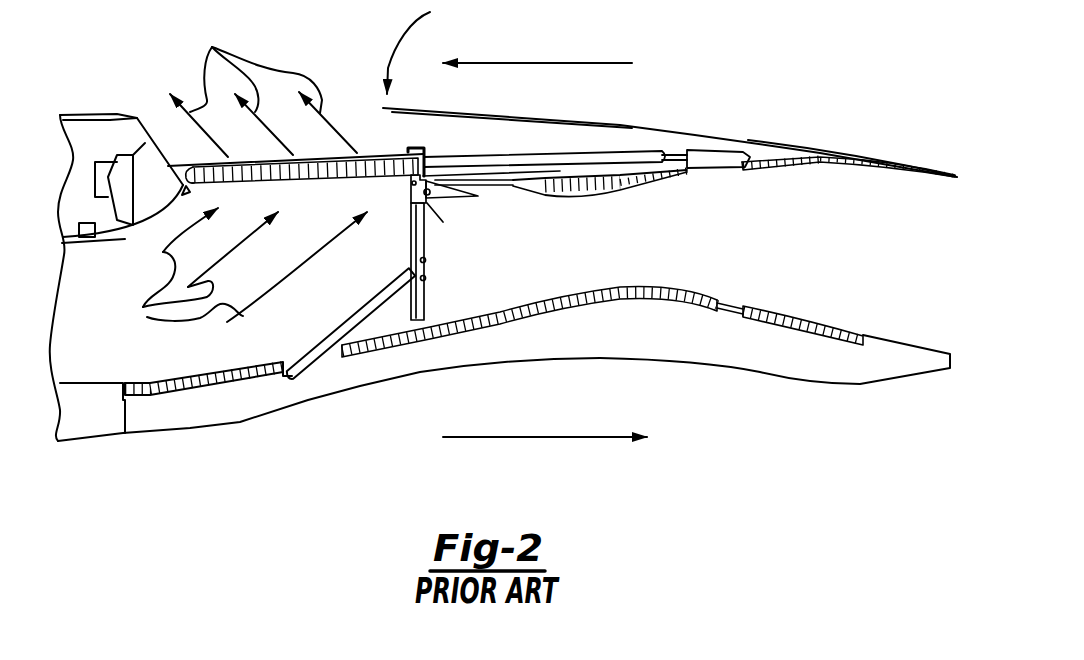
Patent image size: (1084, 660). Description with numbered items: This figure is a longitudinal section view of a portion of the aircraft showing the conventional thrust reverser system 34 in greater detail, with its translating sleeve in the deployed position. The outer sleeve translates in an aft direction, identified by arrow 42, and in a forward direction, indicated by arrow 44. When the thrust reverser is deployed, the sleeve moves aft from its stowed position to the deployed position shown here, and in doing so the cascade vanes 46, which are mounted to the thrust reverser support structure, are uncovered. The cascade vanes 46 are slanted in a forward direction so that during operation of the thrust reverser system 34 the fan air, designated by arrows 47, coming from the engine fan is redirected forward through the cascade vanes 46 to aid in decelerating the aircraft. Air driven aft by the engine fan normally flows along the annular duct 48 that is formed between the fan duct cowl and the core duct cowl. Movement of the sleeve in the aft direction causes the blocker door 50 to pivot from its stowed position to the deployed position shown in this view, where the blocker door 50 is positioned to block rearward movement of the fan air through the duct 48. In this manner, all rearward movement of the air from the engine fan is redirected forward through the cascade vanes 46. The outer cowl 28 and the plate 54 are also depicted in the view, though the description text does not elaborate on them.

The nacelle cowl 28 is at (636, 124).
The thrust reverser system 34 is at (419, 47).
The arrow indicating aft direction 42 is at (576, 437).
The arrow indicating forward direction 44 is at (567, 62).
The cascade vanes 46 is at (334, 187).
The arrow designating fan air 47 is at (239, 179).
The annular duct 48 is at (342, 311).
The blocker door 50 is at (428, 297).
The translating sleeve 54 is at (488, 156).